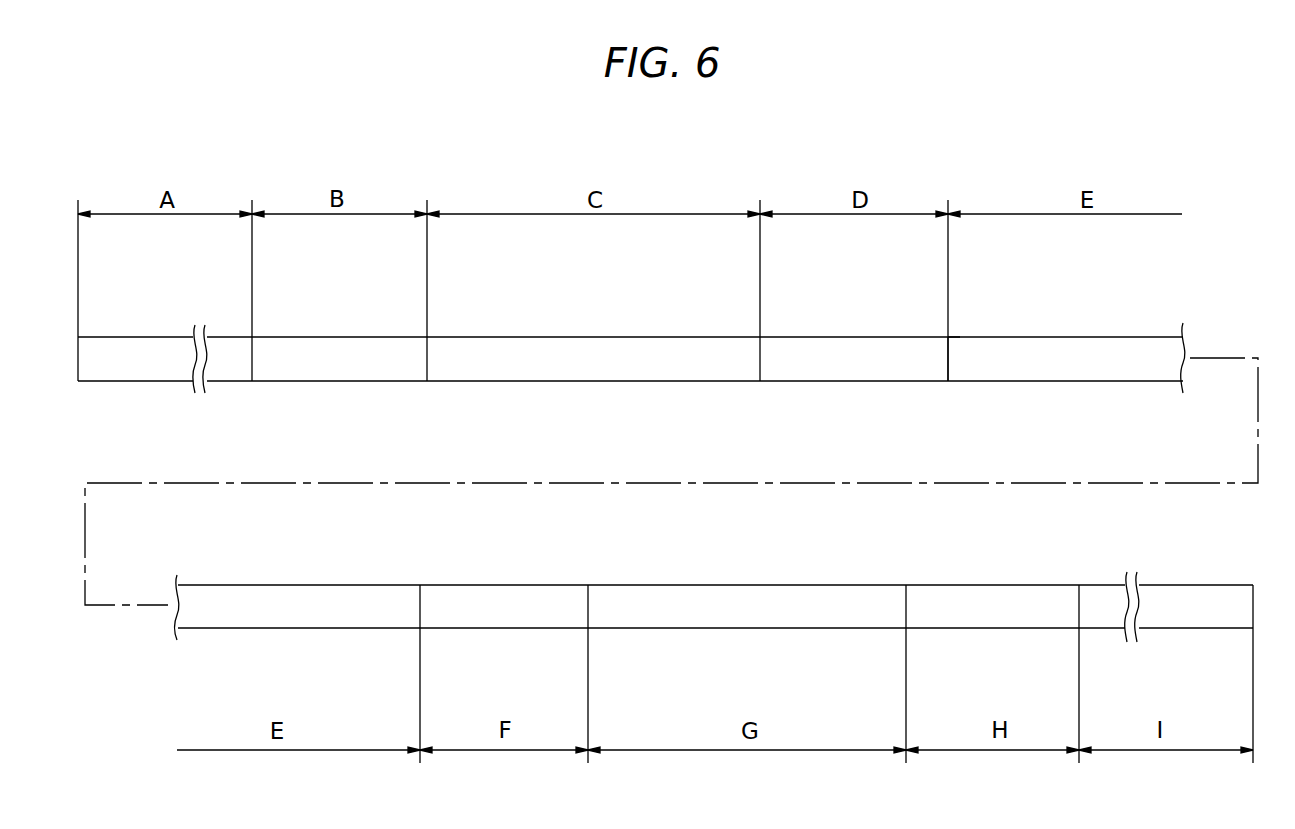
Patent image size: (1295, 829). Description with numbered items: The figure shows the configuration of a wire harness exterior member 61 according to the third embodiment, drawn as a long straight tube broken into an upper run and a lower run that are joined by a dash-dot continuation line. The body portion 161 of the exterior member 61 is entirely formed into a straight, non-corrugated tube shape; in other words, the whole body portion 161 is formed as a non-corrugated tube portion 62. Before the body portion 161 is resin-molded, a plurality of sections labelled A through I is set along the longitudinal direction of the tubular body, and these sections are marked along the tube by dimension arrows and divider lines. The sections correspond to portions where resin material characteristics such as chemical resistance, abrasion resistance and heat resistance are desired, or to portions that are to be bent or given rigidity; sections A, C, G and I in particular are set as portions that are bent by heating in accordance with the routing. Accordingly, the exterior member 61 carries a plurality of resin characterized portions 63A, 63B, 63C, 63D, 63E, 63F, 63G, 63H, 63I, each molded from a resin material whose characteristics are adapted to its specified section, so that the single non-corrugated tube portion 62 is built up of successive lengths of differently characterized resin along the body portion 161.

The exterior member 61 is at (1215, 265).
The non-corrugated tube portion 62 is at (575, 383).
The resin characterized portion 63A is at (178, 337).
The resin characterized portion 63B is at (344, 337).
The resin characterized portion 63C is at (612, 337).
The resin characterized portion 63D is at (858, 337).
The resin characterized portion 63E is at (1115, 337).
The resin characterized portion 63F is at (487, 633).
The resin characterized portion 63G is at (718, 633).
The resin characterized portion 63H is at (963, 633).
The resin characterized portion 63I is at (1185, 633).
The body portion 161 is at (985, 330).